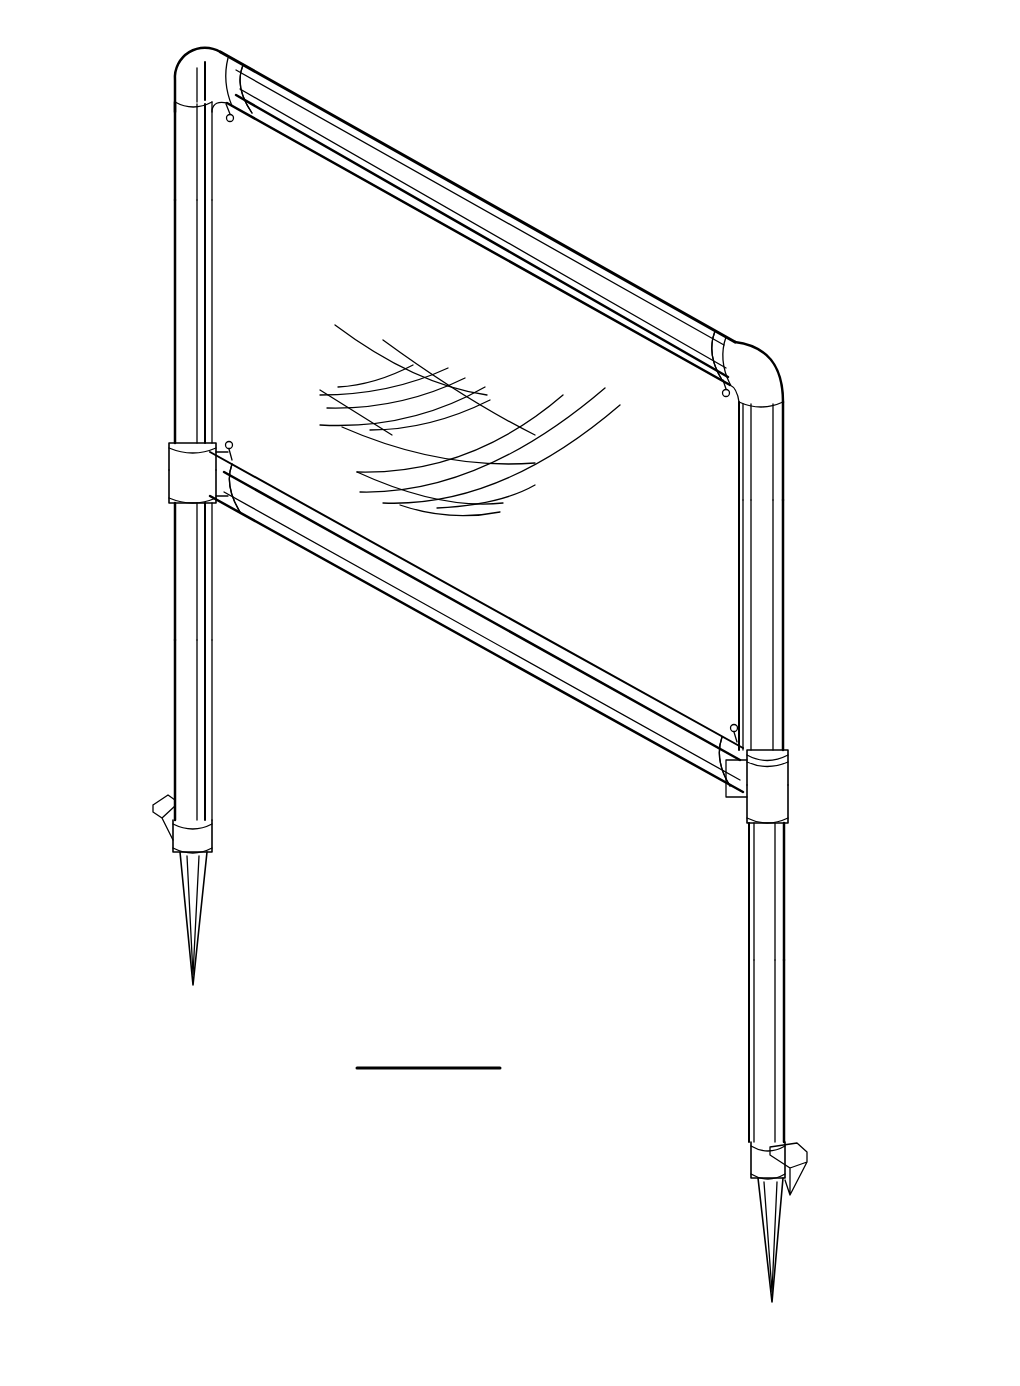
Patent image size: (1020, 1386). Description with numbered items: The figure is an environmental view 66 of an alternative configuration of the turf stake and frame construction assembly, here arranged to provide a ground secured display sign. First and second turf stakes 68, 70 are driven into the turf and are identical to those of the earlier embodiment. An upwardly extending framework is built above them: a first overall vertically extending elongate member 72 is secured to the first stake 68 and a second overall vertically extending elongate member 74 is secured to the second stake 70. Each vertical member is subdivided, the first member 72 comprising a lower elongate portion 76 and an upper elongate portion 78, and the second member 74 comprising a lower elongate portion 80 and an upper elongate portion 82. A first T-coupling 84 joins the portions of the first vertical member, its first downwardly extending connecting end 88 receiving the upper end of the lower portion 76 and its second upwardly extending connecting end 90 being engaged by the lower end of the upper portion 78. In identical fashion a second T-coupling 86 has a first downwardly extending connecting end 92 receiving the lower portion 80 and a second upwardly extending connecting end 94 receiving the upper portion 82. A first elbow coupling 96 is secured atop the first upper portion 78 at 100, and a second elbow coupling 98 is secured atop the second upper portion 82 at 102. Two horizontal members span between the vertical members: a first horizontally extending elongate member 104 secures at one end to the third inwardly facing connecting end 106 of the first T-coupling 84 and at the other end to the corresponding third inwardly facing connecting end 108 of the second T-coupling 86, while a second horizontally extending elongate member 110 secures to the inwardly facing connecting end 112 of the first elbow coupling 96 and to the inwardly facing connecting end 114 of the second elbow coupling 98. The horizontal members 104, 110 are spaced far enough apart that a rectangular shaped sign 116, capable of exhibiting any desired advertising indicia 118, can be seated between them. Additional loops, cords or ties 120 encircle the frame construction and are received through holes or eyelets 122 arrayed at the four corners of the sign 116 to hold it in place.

The environmental view 66 is at (398, 766).
The first turf stake 68 is at (164, 890).
The second turf stake 70 is at (751, 1201).
The first vertically extending elongate member 72 is at (156, 488).
The second vertically extending elongate member 74 is at (793, 786).
The lower elongate portion 76 is at (178, 696).
The upper elongate portion 78 is at (176, 296).
The lower elongate portion 80 is at (780, 986).
The upper elongate portion 82 is at (766, 578).
The first T-coupling 84 is at (176, 453).
The second T-coupling 86 is at (792, 802).
The first downwardly extending connecting end 88 is at (186, 520).
The second upwardly extending connecting end 90 is at (176, 426).
The first downwardly extending connecting end 92 is at (754, 805).
The second upwardly extending connecting end 94 is at (792, 752).
The first elbow coupling 96 is at (212, 62).
The second elbow coupling 98 is at (784, 356).
The upper end of first upper elongate portion 100 is at (176, 128).
The upper end of second upper elongate portion 102 is at (788, 440).
The first horizontally extending elongate member 104 is at (452, 622).
The third inwardly facing connecting end 106 is at (230, 486).
The third inwardly facing connecting end 108 is at (732, 766).
The second horizontally extending elongate member 110 is at (524, 220).
The inwardly facing connecting end 112 is at (242, 80).
The inwardly facing connecting end 114 is at (716, 333).
The rectangular shaped sign 116 is at (468, 316).
The advertising indicia 118 is at (364, 388).
The loops, cords or ties 120 is at (220, 148).
The holes or eyelets 122 is at (232, 122).